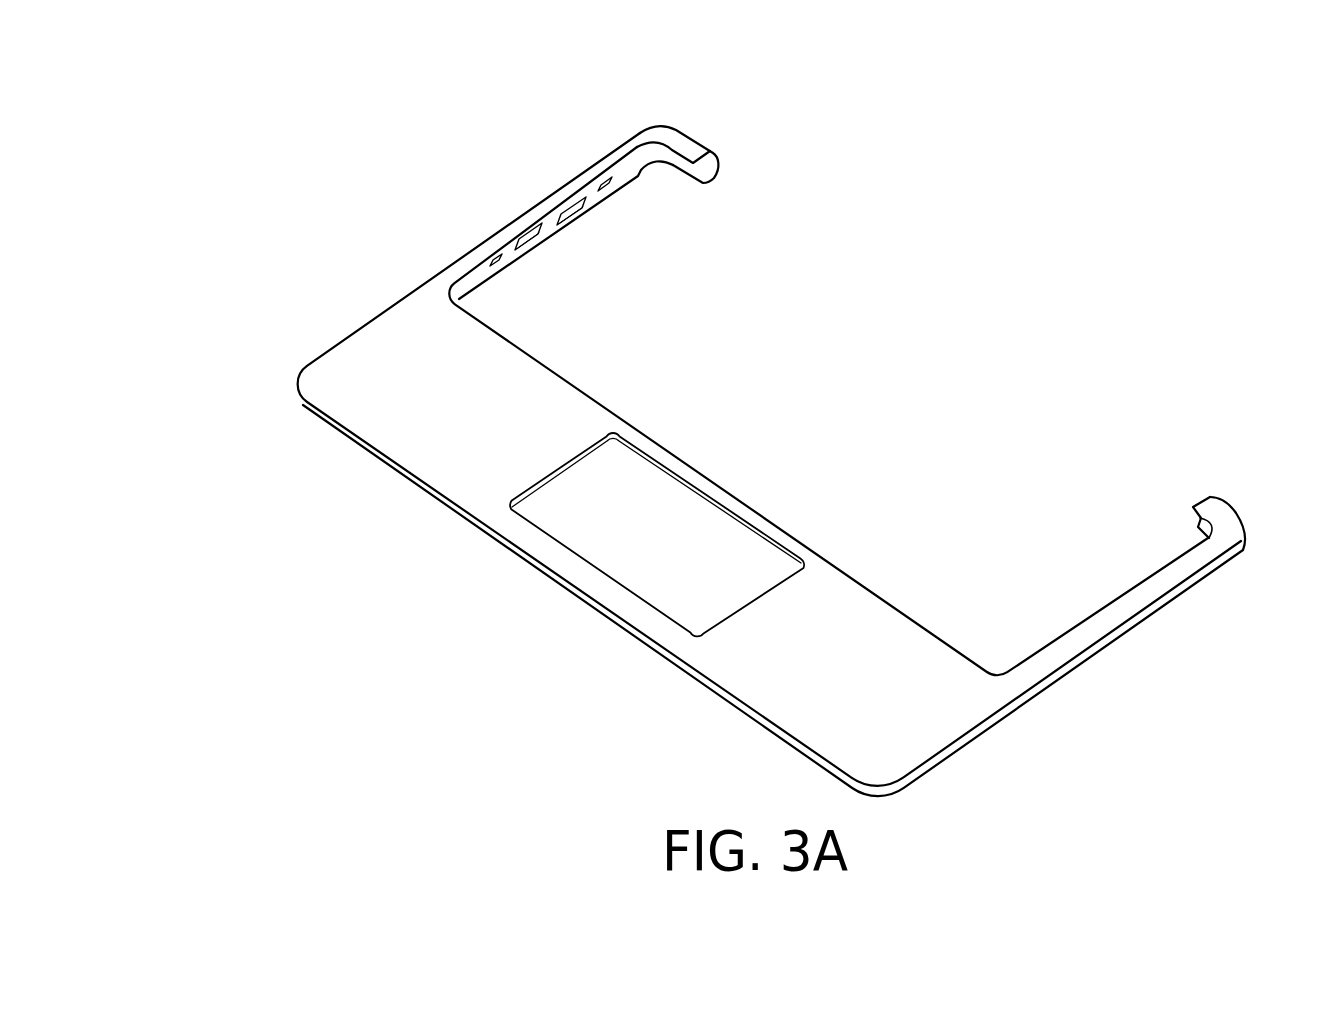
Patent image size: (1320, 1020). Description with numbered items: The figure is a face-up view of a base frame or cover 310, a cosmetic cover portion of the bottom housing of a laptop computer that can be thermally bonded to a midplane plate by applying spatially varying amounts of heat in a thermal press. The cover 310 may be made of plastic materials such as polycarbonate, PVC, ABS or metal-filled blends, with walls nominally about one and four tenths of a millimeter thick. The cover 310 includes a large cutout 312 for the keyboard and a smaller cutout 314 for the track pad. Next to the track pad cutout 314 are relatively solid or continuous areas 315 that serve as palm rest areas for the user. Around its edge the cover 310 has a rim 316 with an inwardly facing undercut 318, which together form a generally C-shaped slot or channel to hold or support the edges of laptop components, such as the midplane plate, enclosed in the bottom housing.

The base frame or cover 310 is at (800, 64).
The keyboard cutout 312 is at (833, 393).
The track pad cutout 314 is at (647, 533).
The solid or continuous areas 315 is at (407, 386).
The rim 316 is at (522, 218).
The inwardly facing undercut 318 is at (747, 176).